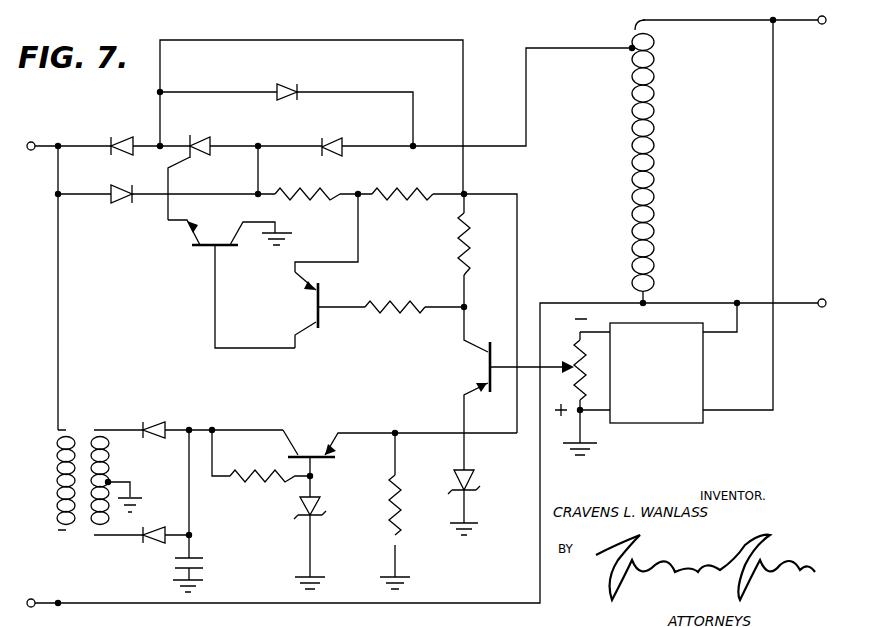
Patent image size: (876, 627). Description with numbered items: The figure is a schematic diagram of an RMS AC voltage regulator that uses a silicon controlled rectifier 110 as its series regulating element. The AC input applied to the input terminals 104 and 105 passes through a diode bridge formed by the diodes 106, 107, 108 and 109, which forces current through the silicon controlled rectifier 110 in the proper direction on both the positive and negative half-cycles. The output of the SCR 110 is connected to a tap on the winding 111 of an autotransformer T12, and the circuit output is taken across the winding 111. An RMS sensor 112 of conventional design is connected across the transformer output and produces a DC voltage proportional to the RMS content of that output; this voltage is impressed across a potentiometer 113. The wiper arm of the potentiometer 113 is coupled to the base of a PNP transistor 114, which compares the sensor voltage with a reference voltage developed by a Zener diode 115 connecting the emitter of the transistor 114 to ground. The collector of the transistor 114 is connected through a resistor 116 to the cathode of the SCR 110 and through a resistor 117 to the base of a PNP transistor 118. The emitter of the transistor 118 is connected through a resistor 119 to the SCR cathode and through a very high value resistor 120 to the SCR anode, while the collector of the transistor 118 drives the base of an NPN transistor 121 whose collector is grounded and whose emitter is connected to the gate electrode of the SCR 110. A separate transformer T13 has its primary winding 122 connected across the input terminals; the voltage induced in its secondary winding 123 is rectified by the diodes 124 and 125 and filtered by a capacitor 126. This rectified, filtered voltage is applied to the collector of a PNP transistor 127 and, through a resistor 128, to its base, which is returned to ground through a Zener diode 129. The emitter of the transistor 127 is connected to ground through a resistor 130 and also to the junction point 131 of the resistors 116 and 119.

The input terminal 104 is at (36, 141).
The input terminal 105 is at (47, 566).
The diode 106 is at (130, 135).
The diode 107 is at (118, 203).
The diode 108 is at (279, 82).
The diode 109 is at (336, 135).
The silicon controlled rectifier 110 is at (200, 130).
The winding 111 is at (655, 90).
The autotransformer T12 is at (672, 172).
The RMS sensor 112 is at (705, 370).
The potentiometer 113 is at (572, 360).
The PNP transistor 114 is at (492, 392).
The Zener diode 115 is at (471, 486).
The resistor 116 is at (462, 258).
The resistor 117 is at (402, 316).
The PNP transistor 118 is at (323, 297).
The resistor 119 is at (410, 203).
The very high value resistor 120 is at (322, 190).
The NPN transistor 121 is at (205, 248).
The primary winding 122 is at (60, 452).
The secondary winding 123 is at (92, 526).
The transformer T13 is at (84, 448).
The diode 124 is at (158, 420).
The diode 125 is at (156, 547).
The capacitor 126 is at (200, 557).
The PNP transistor 127 is at (328, 460).
The resistor 128 is at (258, 484).
The Zener diode 129 is at (322, 505).
The resistor 130 is at (390, 514).
The junction point 131 is at (469, 192).